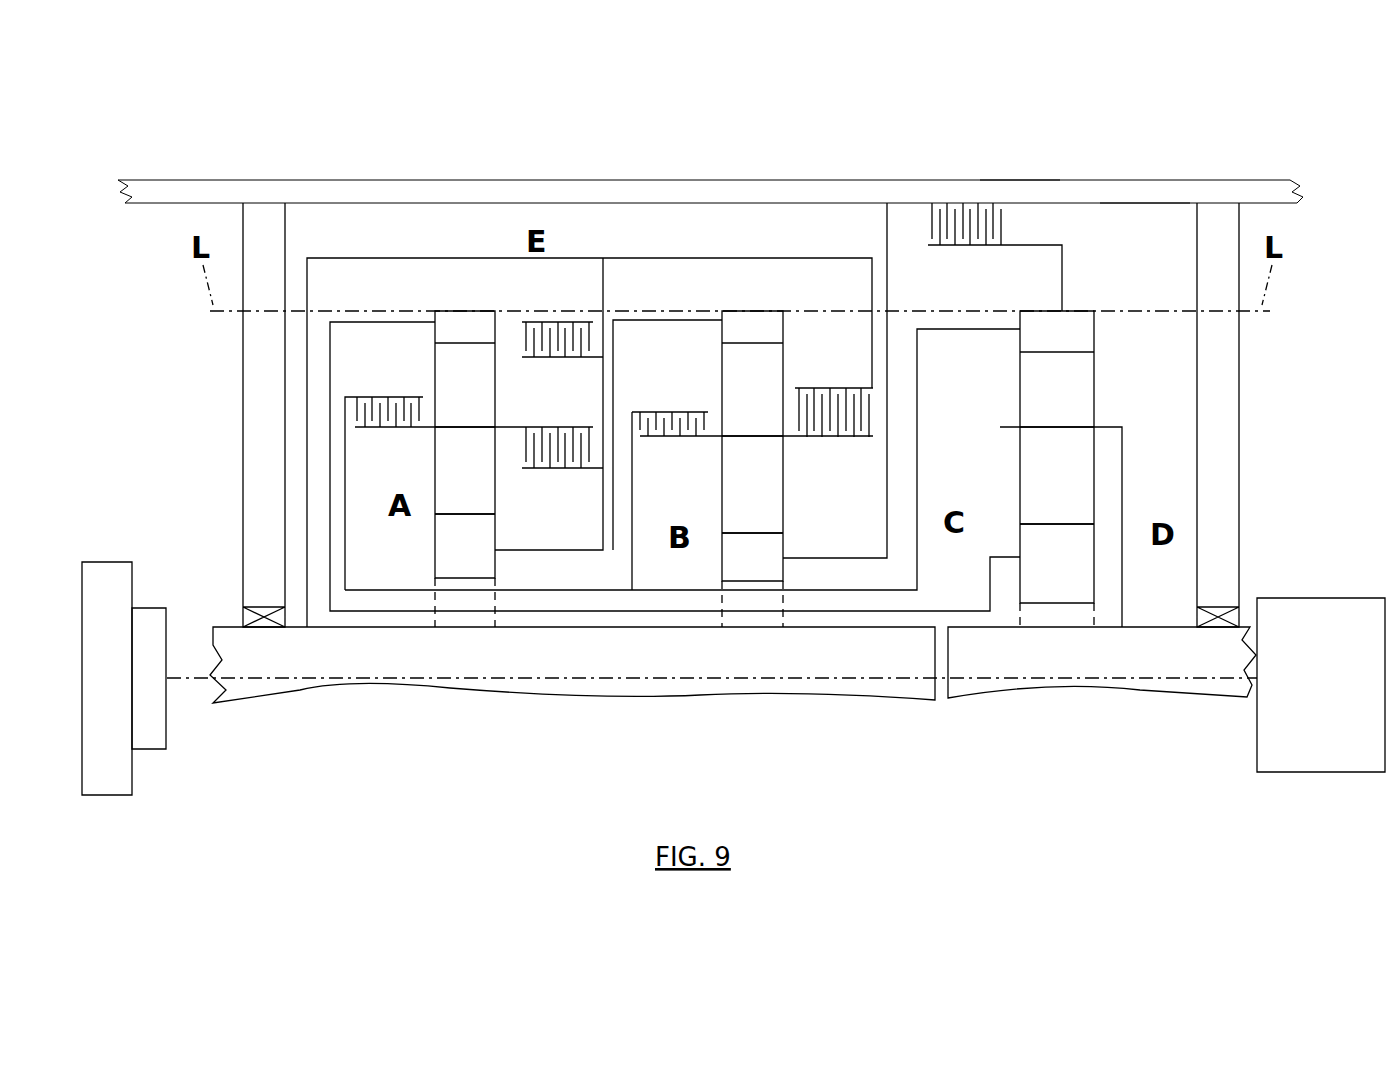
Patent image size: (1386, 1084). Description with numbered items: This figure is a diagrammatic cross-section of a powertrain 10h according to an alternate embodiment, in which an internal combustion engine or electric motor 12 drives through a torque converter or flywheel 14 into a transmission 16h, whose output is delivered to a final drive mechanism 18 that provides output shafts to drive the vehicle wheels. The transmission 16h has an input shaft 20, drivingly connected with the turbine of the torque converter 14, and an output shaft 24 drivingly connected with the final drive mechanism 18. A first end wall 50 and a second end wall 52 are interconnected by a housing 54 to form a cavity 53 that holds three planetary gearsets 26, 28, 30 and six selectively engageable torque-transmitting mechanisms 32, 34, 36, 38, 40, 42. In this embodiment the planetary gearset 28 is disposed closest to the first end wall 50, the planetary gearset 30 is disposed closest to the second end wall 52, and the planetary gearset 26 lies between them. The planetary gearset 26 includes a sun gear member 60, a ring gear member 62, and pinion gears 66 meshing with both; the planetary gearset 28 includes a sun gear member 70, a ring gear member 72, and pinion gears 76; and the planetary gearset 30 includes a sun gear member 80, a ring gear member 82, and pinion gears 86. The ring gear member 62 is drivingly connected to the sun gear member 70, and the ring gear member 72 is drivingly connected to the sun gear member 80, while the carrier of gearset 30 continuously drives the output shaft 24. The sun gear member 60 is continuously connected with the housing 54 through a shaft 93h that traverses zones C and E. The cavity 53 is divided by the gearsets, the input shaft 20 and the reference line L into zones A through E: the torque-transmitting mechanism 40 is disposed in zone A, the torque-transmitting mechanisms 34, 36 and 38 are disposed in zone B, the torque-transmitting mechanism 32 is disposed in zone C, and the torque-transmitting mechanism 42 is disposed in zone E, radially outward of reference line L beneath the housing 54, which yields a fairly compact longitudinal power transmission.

The powertrain 10h is at (356, 160).
The internal combustion engine or electric motor 12 is at (107, 678).
The torque converter or flywheel 14 is at (149, 678).
The transmission 16h is at (1258, 350).
The final drive mechanism 18 is at (1257, 748).
The input shaft 20 is at (640, 705).
The output shaft 24 is at (1133, 700).
The planetary gearset 26 is at (738, 539).
The planetary gearset 28 is at (450, 533).
The planetary gearset 30 is at (1053, 540).
The torque-transmitting mechanism 32 is at (812, 437).
The torque-transmitting mechanism 34 is at (535, 357).
The torque-transmitting mechanism 36 is at (535, 468).
The torque-transmitting mechanism 38 is at (652, 436).
The torque-transmitting mechanism 40 is at (380, 427).
The torque-transmitting mechanism 42 is at (938, 245).
The first end wall 50 is at (243, 230).
The second end wall 52 is at (1242, 425).
The cavity 53 is at (1118, 248).
The housing 54 is at (1018, 180).
The sun gear member 60 is at (752, 553).
The ring gear member 62 is at (722, 327).
The pinion gears 66 is at (752, 484).
The sun gear member 70 is at (465, 539).
The ring gear member 72 is at (435, 328).
The pinion gears 76 is at (465, 470).
The sun gear member 80 is at (1057, 552).
The ring gear member 82 is at (1057, 335).
The pinion gears 86 is at (1057, 475).
The shaft 93h is at (887, 228).